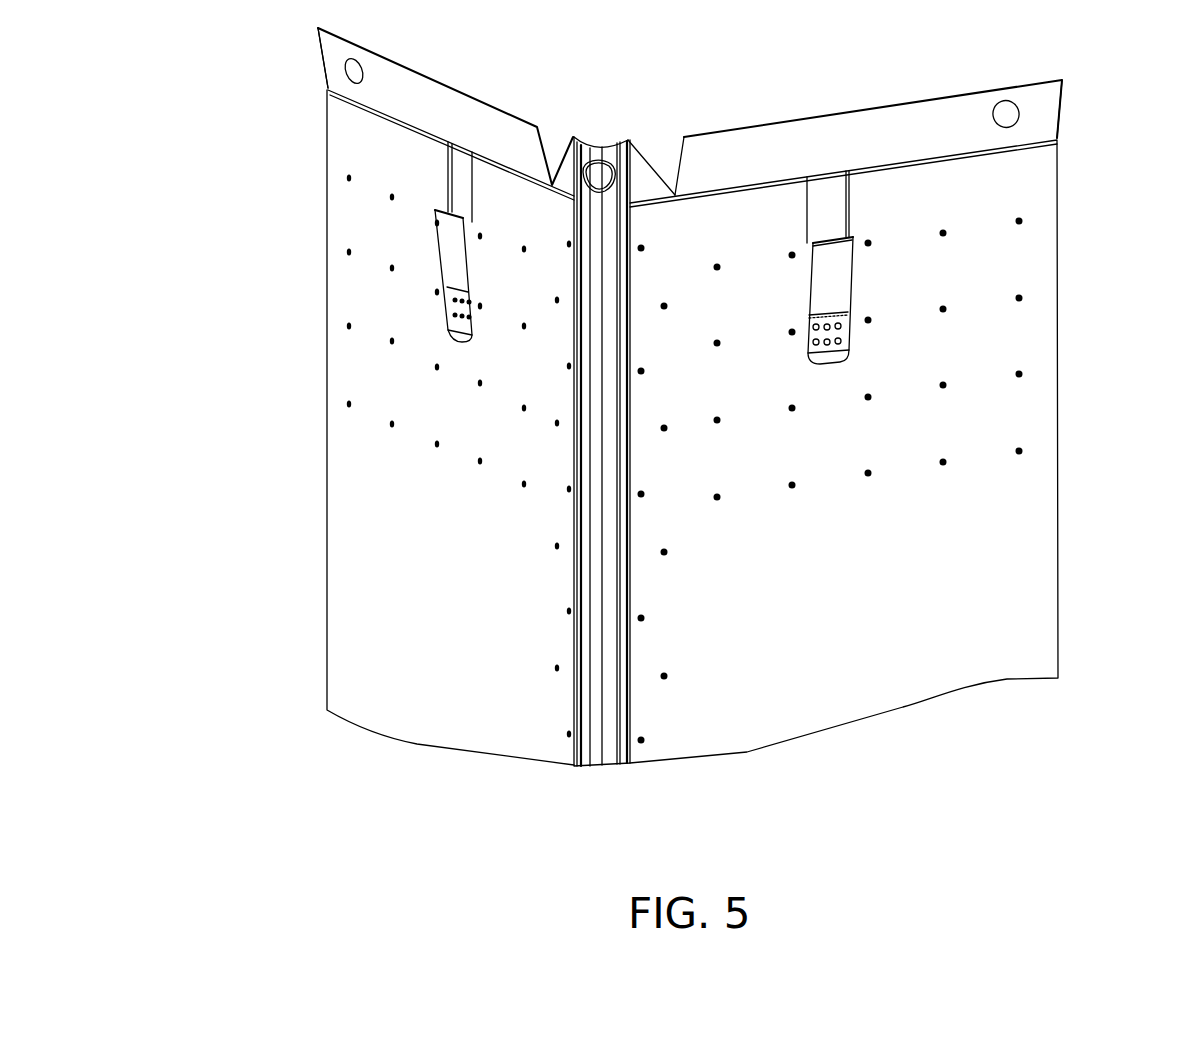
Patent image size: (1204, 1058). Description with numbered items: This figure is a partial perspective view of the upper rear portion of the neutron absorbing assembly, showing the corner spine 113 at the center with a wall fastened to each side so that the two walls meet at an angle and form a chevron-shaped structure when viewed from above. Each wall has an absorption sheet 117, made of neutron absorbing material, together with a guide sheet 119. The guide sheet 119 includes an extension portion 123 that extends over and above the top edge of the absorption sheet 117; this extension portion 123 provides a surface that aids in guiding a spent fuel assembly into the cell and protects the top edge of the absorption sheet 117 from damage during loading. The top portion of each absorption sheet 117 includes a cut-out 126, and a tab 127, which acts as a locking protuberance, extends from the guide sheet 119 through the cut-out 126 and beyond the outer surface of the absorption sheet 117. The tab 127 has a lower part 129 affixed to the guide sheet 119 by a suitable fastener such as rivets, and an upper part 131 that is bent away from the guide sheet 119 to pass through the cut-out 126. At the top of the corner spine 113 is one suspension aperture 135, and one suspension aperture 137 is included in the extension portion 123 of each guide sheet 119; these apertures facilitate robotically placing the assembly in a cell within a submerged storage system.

The corner spine 113 is at (627, 138).
The absorption sheet 117 is at (360, 562).
The guide sheet 119 is at (470, 90).
The extension portion 123 is at (332, 60).
The cut-out 126 is at (847, 193).
The tab 127 is at (838, 280).
The lower part 129 is at (842, 333).
The upper part 131 is at (833, 235).
The suspension aperture 135 is at (593, 165).
The suspension aperture 137 is at (355, 60).